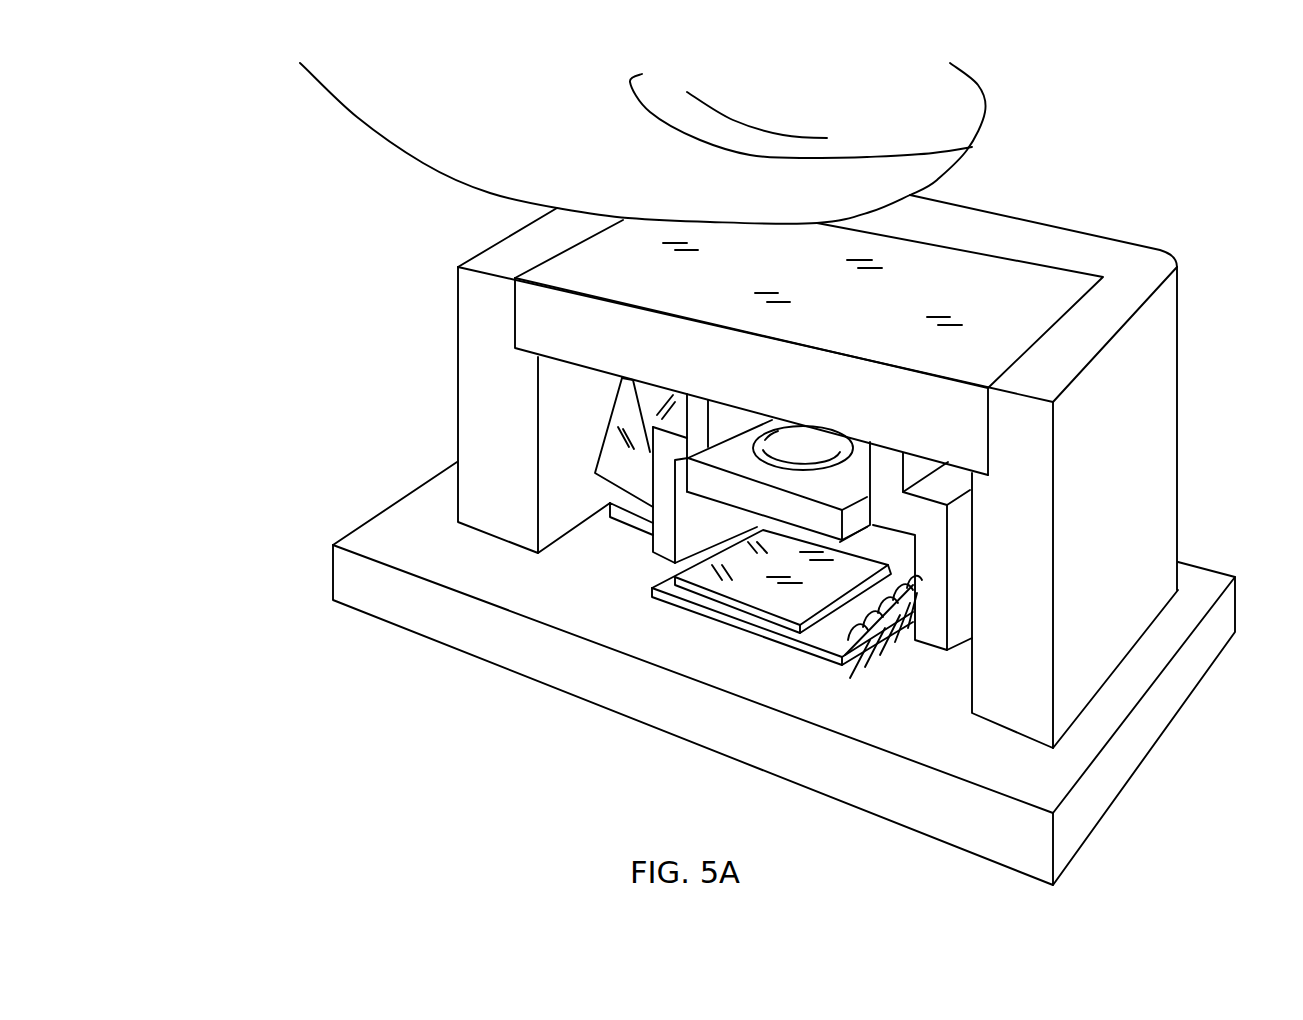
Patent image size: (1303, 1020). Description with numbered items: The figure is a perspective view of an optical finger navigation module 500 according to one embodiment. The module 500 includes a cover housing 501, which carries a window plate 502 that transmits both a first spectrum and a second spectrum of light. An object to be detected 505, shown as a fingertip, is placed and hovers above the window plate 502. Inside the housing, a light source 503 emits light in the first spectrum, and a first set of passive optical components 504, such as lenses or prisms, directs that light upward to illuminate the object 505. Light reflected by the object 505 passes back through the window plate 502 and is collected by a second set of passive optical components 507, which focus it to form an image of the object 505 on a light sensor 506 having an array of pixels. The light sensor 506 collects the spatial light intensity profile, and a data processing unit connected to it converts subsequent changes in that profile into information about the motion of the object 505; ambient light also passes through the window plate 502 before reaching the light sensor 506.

The OFN module 500 is at (1110, 129).
The cover housing 501 is at (480, 323).
The window plate 502 is at (583, 270).
The light source 503 is at (612, 512).
The first set of passive optical components 504 is at (605, 443).
The object to be detected 505 is at (893, 180).
The light sensor 506 is at (653, 598).
The second set of passive optical components 507 is at (790, 453).